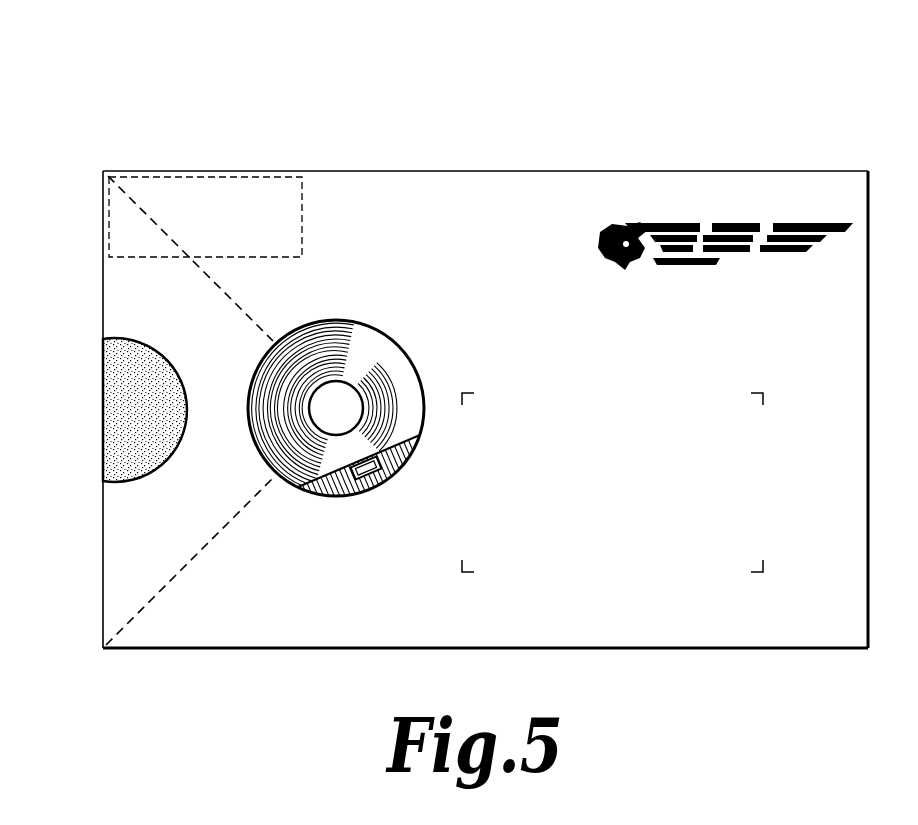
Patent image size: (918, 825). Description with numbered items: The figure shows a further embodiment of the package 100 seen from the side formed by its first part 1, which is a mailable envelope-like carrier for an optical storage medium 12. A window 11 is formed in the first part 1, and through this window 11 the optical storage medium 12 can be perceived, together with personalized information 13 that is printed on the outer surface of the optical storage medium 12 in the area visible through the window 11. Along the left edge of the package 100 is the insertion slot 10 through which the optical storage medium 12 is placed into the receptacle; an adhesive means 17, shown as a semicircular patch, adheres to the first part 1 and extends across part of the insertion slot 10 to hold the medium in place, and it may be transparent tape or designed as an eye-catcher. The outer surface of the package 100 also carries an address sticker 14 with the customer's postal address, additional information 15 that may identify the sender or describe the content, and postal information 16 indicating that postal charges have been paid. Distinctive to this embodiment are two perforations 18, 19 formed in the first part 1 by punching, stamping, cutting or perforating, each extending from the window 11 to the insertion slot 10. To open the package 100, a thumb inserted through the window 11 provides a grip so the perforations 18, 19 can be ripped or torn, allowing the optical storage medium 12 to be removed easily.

The package 100 is at (222, 112).
The first part 1 is at (148, 170).
The insertion slot 10 is at (102, 520).
The window 11 is at (400, 348).
The optical storage medium 12 is at (327, 486).
The personalized information 13 is at (375, 480).
The address sticker 14 is at (537, 417).
The additional information 15 is at (273, 170).
The postal information 16 is at (730, 225).
The adhesive means 17 is at (108, 382).
The perforation 18 is at (207, 275).
The perforation 19 is at (220, 523).